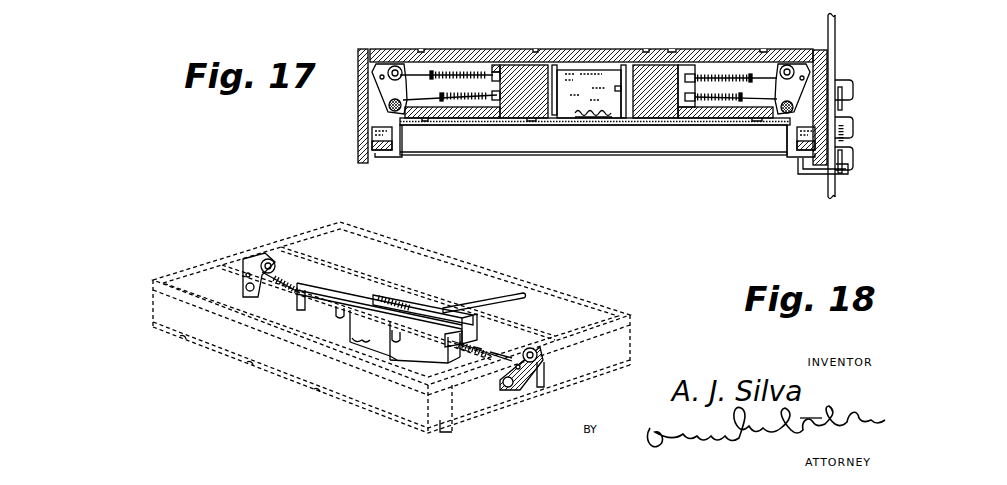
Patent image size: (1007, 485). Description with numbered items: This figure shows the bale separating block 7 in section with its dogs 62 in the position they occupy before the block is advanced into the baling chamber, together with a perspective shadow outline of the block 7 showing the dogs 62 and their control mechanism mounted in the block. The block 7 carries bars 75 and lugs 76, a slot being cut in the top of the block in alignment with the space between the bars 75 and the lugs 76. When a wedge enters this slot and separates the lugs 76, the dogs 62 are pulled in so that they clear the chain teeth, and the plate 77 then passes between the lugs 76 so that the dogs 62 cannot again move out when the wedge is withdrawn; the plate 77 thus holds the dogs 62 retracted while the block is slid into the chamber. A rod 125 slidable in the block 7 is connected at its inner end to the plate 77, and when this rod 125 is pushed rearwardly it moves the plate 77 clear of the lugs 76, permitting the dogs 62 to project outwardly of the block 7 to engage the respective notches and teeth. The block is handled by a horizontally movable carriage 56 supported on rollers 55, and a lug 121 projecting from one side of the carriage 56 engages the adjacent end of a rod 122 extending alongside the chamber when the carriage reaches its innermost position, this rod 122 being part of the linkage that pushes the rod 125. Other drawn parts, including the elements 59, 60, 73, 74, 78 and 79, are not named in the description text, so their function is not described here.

In FIG. 17, the bale separating block 7 is at (515, 115).
In FIG. 18, the bale separating block 7 is at (605, 340).
In FIG. 17, the rollers 55 is at (390, 157).
In FIG. 17, the carriage 56 is at (513, 143).
In FIG. 18, the clip 59 is at (448, 417).
In FIG. 17, the mounting plate 60 is at (383, 108).
In FIG. 18, the mounting plate 60 is at (540, 386).
In FIG. 17, the dogs 62 is at (383, 84).
In FIG. 18, the dogs 62 is at (522, 382).
In FIG. 18, the screw 73 is at (500, 357).
In FIG. 17, the spring 74 is at (707, 78).
In FIG. 18, the spring 74 is at (303, 300).
In FIG. 18, the bars 75 is at (383, 293).
In FIG. 17, the lugs 76 is at (560, 66).
In FIG. 18, the lugs 76 is at (395, 335).
In FIG. 17, the plate 77 is at (585, 107).
In FIG. 18, the plate 77 is at (397, 313).
In FIG. 17, the cover 78 is at (676, 53).
In FIG. 17, the spring 79 is at (466, 94).
In FIG. 18, the spring 79 is at (478, 345).
In FIG. 17, the lug 121 is at (843, 173).
In FIG. 17, the rod 122 is at (843, 108).
In FIG. 17, the rod 125 is at (626, 96).
In FIG. 18, the rod 125 is at (505, 297).